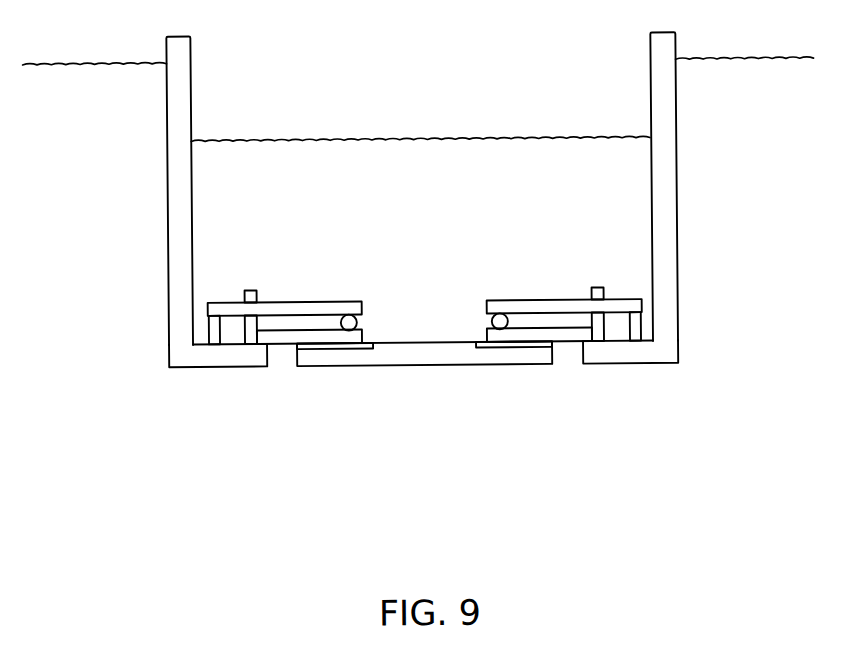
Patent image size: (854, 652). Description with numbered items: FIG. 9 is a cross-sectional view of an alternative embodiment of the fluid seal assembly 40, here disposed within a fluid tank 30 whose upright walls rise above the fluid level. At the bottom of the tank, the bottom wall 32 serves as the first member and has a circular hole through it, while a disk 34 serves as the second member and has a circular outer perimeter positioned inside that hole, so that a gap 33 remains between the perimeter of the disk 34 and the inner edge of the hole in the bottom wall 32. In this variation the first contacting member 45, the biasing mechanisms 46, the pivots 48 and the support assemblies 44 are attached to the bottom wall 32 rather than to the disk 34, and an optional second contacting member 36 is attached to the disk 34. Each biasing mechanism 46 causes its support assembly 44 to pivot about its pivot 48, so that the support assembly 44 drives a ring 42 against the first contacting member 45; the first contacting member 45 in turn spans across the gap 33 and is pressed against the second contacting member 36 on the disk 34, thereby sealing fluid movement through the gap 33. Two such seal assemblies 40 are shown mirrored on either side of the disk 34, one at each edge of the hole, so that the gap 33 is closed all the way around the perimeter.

The fluid tank 30 is at (181, 196).
The bottom wall 32 is at (215, 355).
The gap 33 is at (284, 375).
The disk 34 is at (417, 352).
The second contacting member 36 is at (333, 348).
The fluid seal assembly 40 is at (571, 279).
The ring 42 is at (359, 324).
The support assembly 44 is at (297, 301).
The first contacting member 45 is at (311, 348).
The biasing mechanism 46 is at (257, 323).
The pivot 48 is at (209, 327).